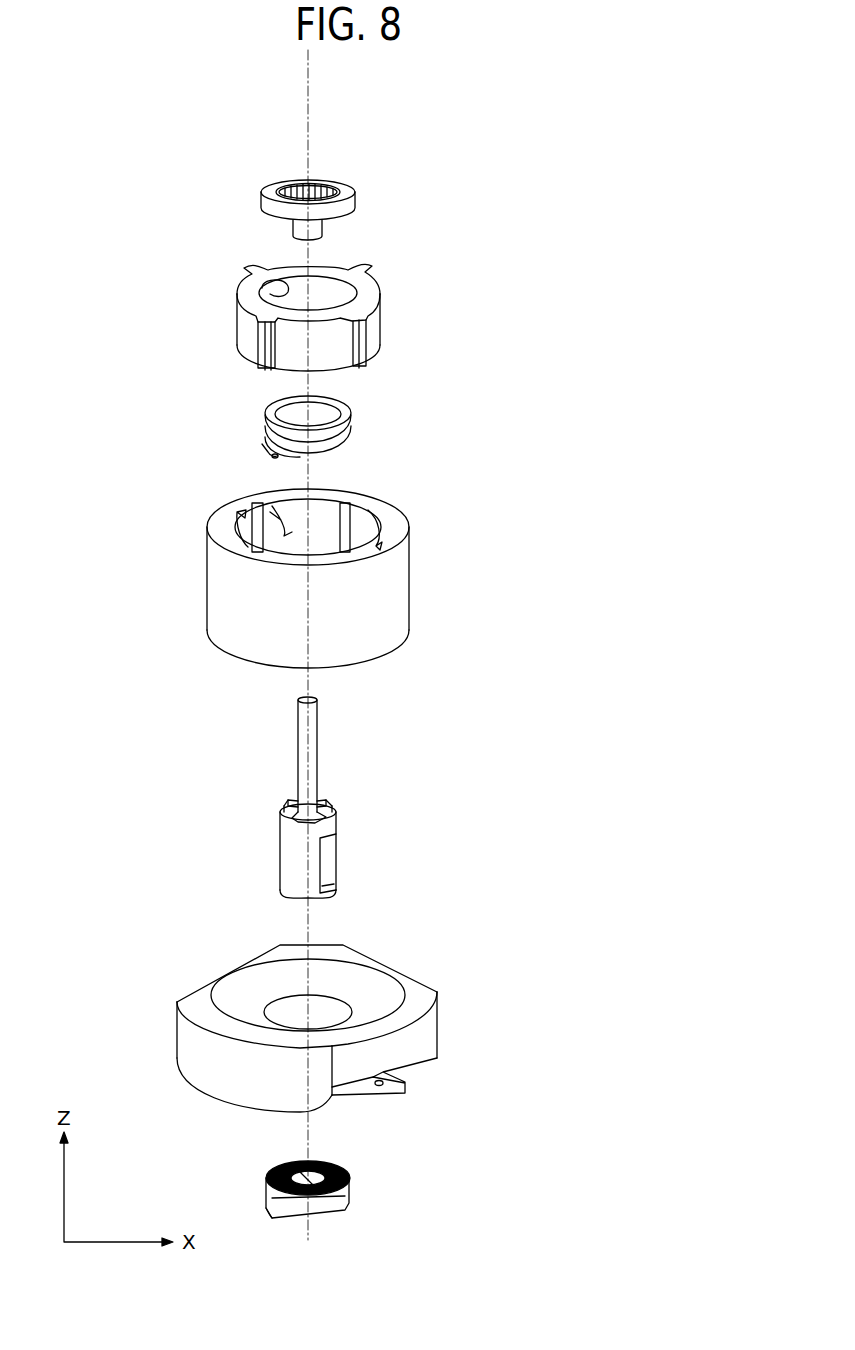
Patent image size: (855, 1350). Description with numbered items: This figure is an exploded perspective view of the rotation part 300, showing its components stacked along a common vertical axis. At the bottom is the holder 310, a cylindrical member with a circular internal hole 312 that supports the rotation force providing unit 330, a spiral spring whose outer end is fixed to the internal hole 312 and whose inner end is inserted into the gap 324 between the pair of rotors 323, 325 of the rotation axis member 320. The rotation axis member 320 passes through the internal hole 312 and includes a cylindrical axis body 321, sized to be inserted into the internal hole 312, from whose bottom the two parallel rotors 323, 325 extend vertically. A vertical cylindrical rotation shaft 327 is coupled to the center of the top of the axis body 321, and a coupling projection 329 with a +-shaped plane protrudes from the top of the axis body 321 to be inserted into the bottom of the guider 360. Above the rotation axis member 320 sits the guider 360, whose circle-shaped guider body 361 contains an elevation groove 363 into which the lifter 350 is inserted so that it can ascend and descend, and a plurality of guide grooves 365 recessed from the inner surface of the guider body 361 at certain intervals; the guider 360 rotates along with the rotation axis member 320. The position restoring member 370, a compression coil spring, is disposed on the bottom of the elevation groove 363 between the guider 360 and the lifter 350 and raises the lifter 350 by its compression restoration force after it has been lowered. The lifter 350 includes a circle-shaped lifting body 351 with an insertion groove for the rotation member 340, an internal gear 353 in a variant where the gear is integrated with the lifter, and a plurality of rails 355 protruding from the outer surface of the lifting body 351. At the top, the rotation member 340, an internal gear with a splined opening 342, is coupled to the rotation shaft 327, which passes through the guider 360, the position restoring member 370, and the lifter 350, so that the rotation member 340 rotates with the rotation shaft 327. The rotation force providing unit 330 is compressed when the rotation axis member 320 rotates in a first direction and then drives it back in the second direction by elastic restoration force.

The rotation part 300 is at (150, 158).
The holder 310 is at (362, 1024).
The internal hole 312 is at (336, 1008).
The rotation axis member 320 is at (310, 806).
The axis body 321 is at (330, 827).
The rotor 323 is at (332, 870).
The gap 324 is at (328, 892).
The rotor 325 is at (280, 866).
The rotation shaft 327 is at (314, 752).
The coupling projection 329 is at (320, 811).
The rotation force providing unit 330 is at (352, 1185).
The rotation member 340 is at (357, 188).
The spline hole 342 is at (316, 183).
The lifter 350 is at (301, 293).
The lifting body 351 is at (374, 290).
The internal gear 353 is at (237, 298).
The rails 355 is at (372, 338).
The guider 360 is at (319, 545).
The guider body 361 is at (396, 603).
The elevation groove 363 is at (257, 510).
The guide grooves 365 is at (352, 497).
The position restoring member 370 is at (347, 421).